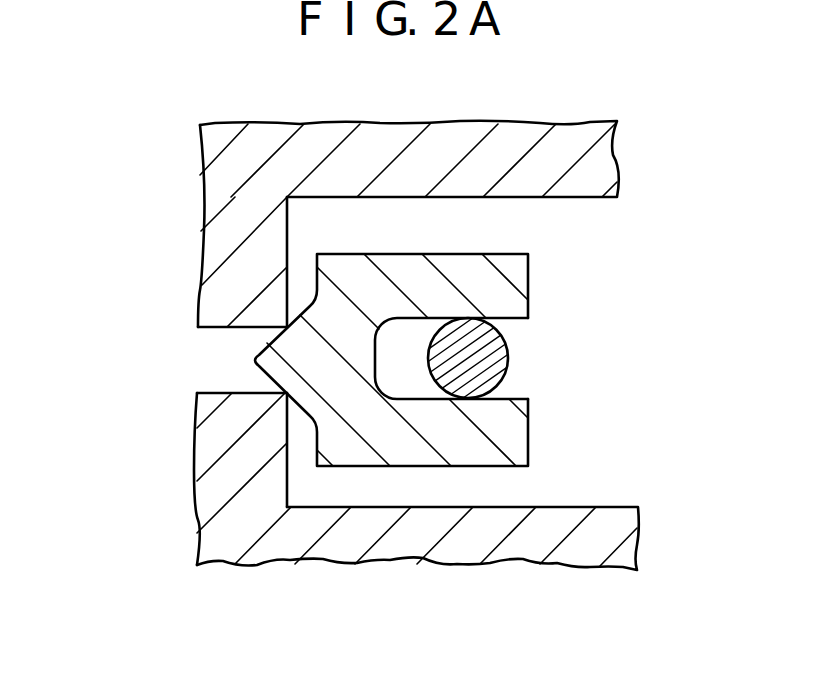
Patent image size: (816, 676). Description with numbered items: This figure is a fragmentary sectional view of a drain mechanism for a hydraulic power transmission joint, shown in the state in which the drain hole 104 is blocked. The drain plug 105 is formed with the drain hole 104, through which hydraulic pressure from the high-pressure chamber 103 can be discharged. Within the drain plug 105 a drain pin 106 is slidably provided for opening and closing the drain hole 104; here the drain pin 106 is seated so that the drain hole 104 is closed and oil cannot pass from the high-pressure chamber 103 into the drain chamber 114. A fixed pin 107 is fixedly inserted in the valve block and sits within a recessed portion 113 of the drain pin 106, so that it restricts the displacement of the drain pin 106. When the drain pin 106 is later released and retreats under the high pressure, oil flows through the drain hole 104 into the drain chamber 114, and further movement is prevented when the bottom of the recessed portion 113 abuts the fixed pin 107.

The high-pressure chamber 103 is at (215, 345).
The drain hole 104 is at (241, 393).
The drain plug 105 is at (395, 153).
The drain pin 106 is at (482, 448).
The fixed pin 107 is at (492, 338).
The recessed portion 113 is at (510, 397).
The drain chamber 114 is at (348, 487).